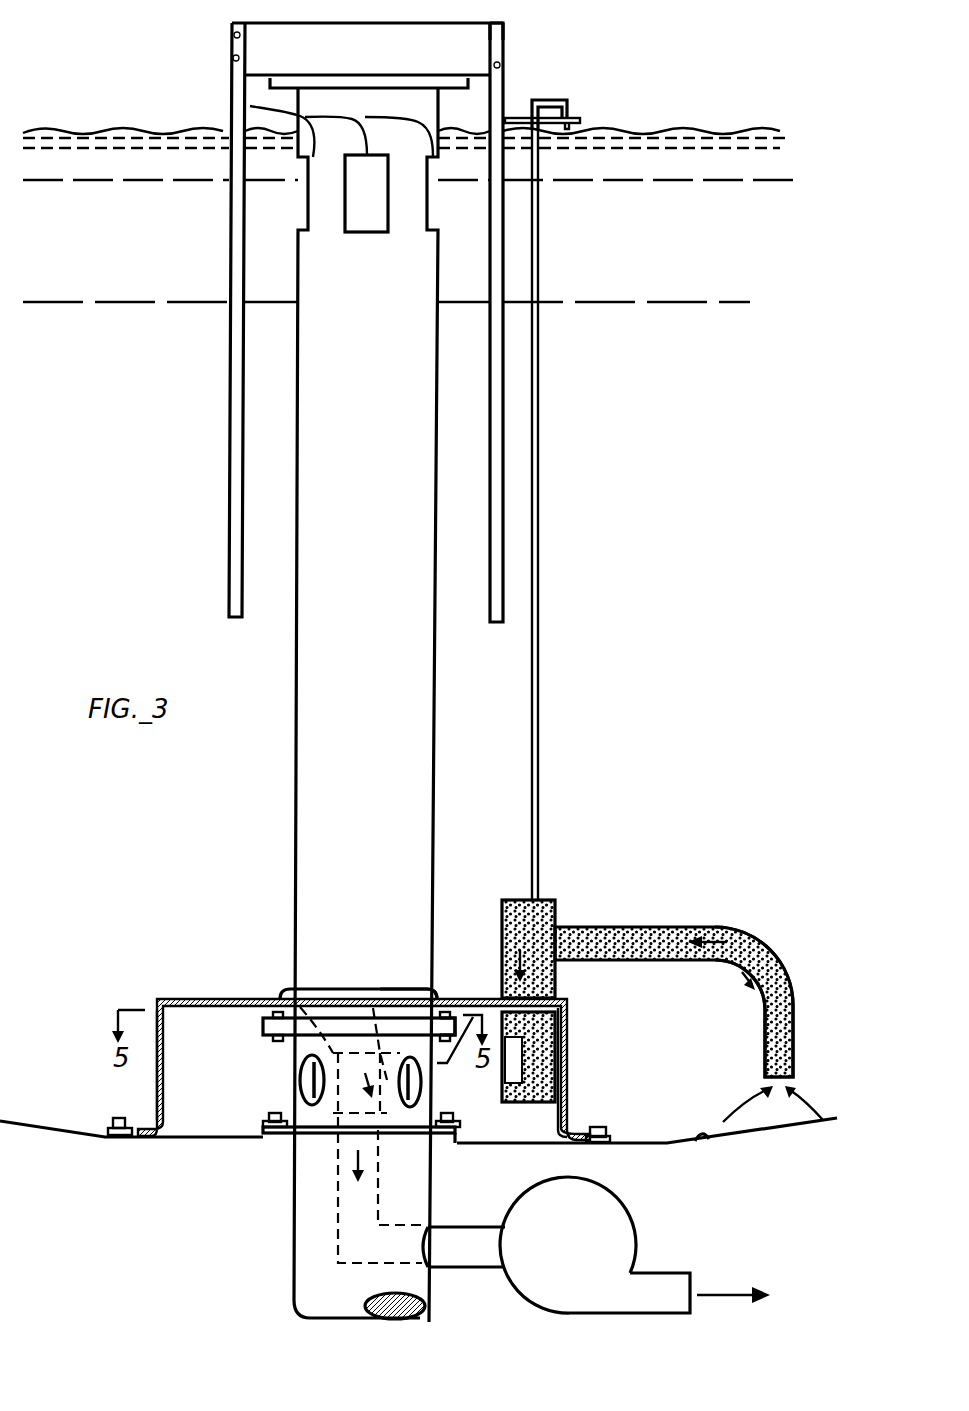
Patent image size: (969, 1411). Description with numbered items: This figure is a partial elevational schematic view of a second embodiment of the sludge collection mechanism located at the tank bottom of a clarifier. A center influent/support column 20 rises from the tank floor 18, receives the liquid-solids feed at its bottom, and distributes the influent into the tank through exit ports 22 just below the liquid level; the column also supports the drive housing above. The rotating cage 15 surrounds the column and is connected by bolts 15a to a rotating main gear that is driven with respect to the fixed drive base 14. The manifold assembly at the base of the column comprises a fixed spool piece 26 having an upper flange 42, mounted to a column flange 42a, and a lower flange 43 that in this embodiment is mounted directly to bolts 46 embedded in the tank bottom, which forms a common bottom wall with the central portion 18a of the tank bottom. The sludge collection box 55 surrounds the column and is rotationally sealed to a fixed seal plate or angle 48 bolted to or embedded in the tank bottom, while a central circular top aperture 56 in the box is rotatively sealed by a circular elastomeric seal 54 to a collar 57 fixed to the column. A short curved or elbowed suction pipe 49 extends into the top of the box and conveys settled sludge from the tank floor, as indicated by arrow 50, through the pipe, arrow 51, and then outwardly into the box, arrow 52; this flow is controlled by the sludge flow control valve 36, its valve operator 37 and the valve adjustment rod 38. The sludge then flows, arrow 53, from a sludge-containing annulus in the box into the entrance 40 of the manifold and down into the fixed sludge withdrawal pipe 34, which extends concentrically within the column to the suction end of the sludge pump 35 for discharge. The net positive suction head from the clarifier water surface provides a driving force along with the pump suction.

The drive base 14 is at (258, 30).
The cage 15 is at (507, 103).
The bolts 15a is at (505, 30).
The tank floor 18 is at (698, 1137).
The central portion of the tank bottom 18a is at (180, 1137).
The center influent/support column 20 is at (433, 725).
The exit ports 22 is at (250, 106).
The spool piece 26 is at (297, 1077).
The sludge withdrawal pipe 34 is at (337, 1197).
The sludge pump 35 is at (607, 1227).
The sludge flow control valve 36 is at (520, 1048).
The valve operator 37 is at (570, 107).
The valve adjustment rod 38 is at (540, 163).
The manifold entrance 40 is at (300, 1070).
The upper flange 42 is at (263, 1028).
The column flange 42a is at (453, 997).
The lower flange 43 is at (263, 1128).
The bolts 46 is at (293, 993).
The seal plate or angle 48 is at (587, 1147).
The curved suction pipe 49 is at (703, 923).
The arrow 50 is at (812, 1115).
The arrow 51 is at (732, 943).
The arrow 52 is at (468, 1083).
The arrow 53 is at (490, 990).
The seal 54 is at (367, 990).
The sludge collection box 55 is at (207, 997).
The central circular top aperture 56 is at (380, 993).
The collar 57 is at (370, 998).